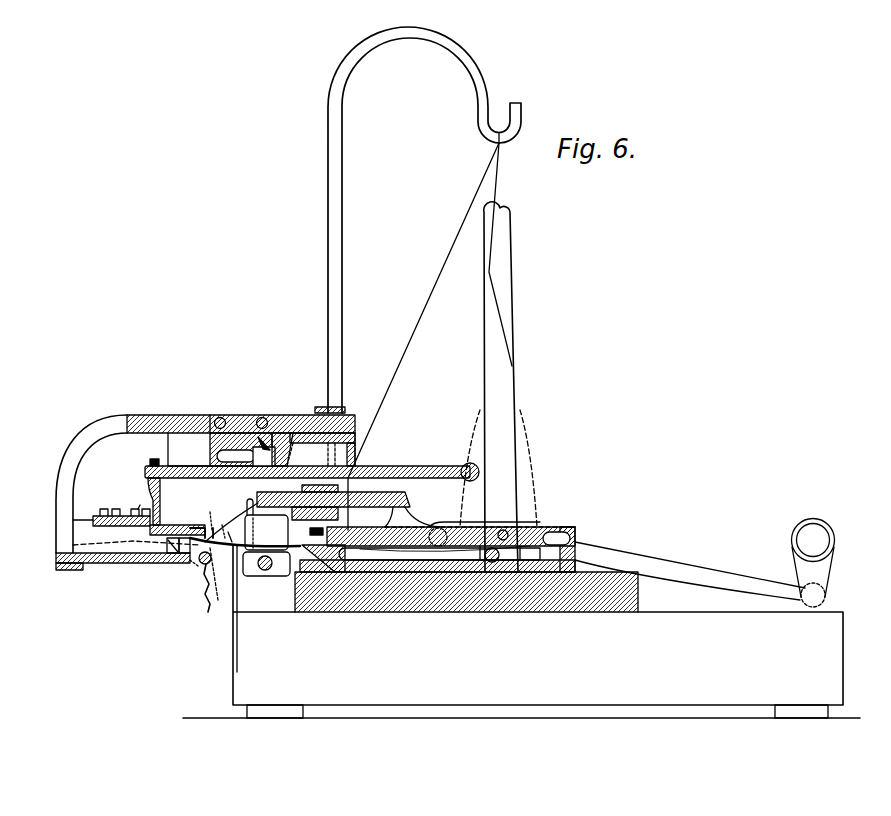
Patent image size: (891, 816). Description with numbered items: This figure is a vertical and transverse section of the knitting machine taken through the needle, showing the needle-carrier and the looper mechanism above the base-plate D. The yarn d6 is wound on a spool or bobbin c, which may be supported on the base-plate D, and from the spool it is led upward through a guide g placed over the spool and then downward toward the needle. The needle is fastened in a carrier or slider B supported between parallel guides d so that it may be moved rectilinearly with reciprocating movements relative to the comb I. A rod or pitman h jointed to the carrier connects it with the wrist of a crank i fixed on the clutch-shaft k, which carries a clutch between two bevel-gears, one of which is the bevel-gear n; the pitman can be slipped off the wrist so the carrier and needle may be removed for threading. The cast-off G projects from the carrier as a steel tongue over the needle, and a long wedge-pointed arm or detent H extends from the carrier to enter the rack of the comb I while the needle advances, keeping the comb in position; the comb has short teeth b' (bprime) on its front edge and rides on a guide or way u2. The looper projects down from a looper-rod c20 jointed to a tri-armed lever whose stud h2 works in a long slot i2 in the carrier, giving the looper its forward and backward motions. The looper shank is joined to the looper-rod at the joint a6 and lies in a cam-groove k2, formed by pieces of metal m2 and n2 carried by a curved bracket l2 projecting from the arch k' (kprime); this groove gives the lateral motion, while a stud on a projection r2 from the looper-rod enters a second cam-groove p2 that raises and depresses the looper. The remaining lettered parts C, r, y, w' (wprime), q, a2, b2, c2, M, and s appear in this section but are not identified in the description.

The guide g is at (498, 132).
The yarn d6 is at (448, 336).
The tapered standard C is at (501, 387).
The looper-rod c20 is at (312, 467).
The wedge-pointed arm or detent H is at (337, 499).
The carrier or slider B is at (477, 519).
The long slot i2 is at (439, 554).
The parallel guides d is at (491, 554).
The stud h2 is at (498, 546).
The rod or pitman h is at (690, 571).
The crank i is at (813, 563).
The base-plate D is at (521, 631).
The cam-groove p2 is at (241, 449).
The projection r2 is at (273, 449).
The arch kprime is at (321, 449).
The bevel-gear n is at (264, 444).
The joint a6 is at (176, 492).
The piece of metal forming cam-groove m2 is at (121, 516).
The piece of metal forming cam-groove n2 is at (141, 502).
The curved bracket l2 is at (129, 545).
The cam-groove k2 is at (159, 539).
The clutch-shaft k is at (187, 528).
The thread guide r is at (245, 533).
The thread y is at (231, 522).
The pin w' wprime is at (244, 504).
The cast-off G is at (266, 532).
The roller q is at (266, 562).
The pin a2 is at (203, 582).
The teeth of the comb bprime is at (216, 574).
The thread end b2 is at (187, 569).
The comb I is at (210, 518).
The pin c2 is at (222, 527).
The member M is at (228, 534).
The spring s is at (173, 544).
The spool or bobbin c is at (210, 528).
The guide or way u2 is at (309, 527).